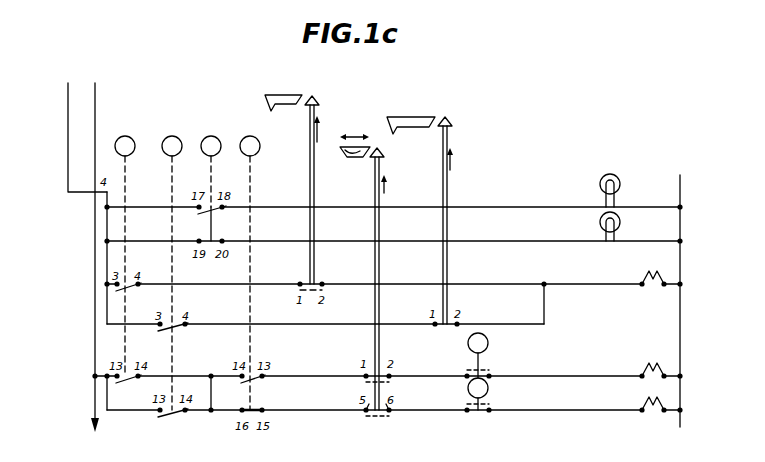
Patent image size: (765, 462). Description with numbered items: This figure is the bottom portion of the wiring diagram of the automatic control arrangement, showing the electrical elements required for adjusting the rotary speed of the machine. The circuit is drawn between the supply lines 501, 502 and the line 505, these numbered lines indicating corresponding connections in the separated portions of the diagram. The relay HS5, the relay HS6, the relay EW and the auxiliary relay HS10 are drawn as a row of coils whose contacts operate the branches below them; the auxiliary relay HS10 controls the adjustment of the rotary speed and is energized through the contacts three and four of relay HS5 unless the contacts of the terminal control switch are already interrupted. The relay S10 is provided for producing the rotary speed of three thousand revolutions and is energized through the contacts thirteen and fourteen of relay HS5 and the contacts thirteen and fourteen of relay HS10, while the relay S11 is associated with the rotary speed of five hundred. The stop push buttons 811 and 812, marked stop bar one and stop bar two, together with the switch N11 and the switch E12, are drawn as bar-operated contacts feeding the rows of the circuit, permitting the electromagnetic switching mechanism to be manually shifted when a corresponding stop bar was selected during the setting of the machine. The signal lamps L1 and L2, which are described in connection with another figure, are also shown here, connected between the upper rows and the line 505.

The line 501 is at (67, 99).
The line 502 is at (96, 101).
The line 505 is at (680, 180).
The stop pushbutton STOP I 811 is at (268, 101).
The stop pushbutton STOP II 812 is at (390, 121).
The relay HS5 is at (125, 137).
The pilot lamp / contactor HS6 is at (172, 137).
The pilot lamp / relay EW is at (211, 137).
The auxiliary relay HS10 is at (250, 137).
The emergency switch N11 is at (351, 158).
The switch E12 is at (383, 163).
The signal lamp L1 is at (620, 224).
The signal lamp L2 is at (619, 179).
The relay S10 is at (488, 388).
The relay S11 is at (488, 343).